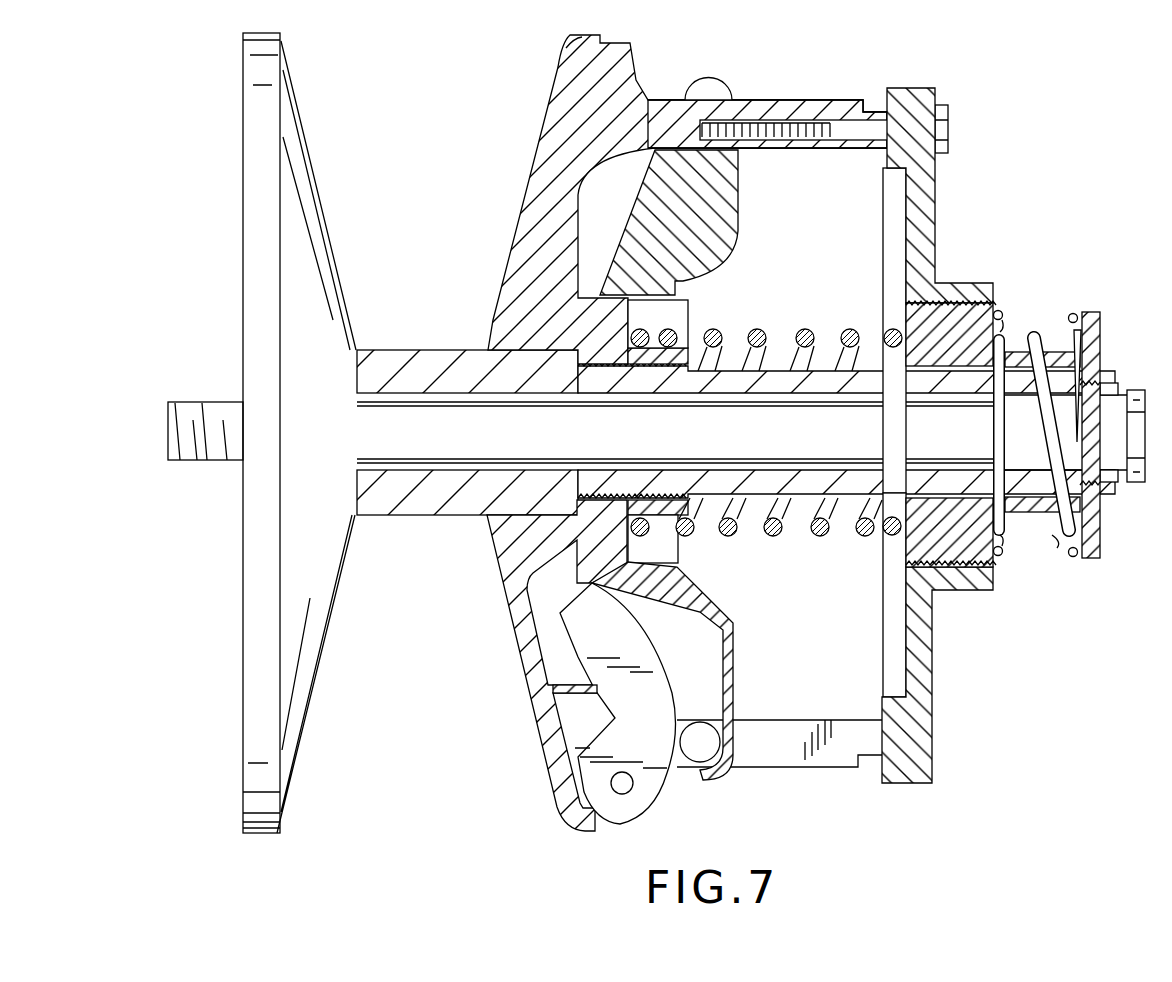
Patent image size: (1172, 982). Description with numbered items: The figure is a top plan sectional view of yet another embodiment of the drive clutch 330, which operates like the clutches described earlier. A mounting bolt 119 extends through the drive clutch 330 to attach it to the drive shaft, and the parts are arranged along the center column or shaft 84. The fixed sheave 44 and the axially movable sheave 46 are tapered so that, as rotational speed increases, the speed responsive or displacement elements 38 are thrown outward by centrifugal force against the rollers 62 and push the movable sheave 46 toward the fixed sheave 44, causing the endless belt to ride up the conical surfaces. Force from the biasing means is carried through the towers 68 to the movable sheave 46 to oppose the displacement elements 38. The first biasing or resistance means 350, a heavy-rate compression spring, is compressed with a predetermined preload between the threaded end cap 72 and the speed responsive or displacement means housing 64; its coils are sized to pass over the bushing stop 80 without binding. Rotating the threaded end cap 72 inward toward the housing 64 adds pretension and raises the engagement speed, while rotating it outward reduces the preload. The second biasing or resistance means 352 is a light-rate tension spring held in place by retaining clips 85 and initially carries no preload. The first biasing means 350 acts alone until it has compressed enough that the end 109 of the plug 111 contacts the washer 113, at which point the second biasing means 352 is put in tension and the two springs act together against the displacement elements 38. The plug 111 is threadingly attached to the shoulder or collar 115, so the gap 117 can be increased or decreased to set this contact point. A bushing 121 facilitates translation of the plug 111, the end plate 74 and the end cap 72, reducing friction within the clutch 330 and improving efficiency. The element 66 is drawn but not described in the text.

The drive clutch 330 is at (682, 62).
The towers 68 is at (842, 100).
The center column or shaft 84 is at (742, 333).
The bushing stop 80 is at (686, 345).
The first biasing or resistance means 350 is at (806, 330).
The bushing 121 is at (880, 335).
The gap 117 is at (948, 330).
The retaining clips 85 is at (1017, 326).
The second biasing or resistance means 352 is at (1047, 318).
The plug 111 is at (1102, 383).
The shoulder or collar 115 is at (1100, 522).
The end of plug 109 is at (972, 577).
The washer 113 is at (942, 567).
The end plate 74 is at (933, 708).
The threaded end cap 72 is at (903, 543).
The cam lever 66 is at (697, 653).
The speed responsive or displacement means housing 64 is at (737, 690).
The rollers 62 is at (703, 770).
The speed responsive or displacement elements 38 is at (647, 807).
The axially movable sheave 46 is at (560, 807).
The fixed sheave 44 is at (285, 807).
The mounting bolt 119 is at (187, 401).